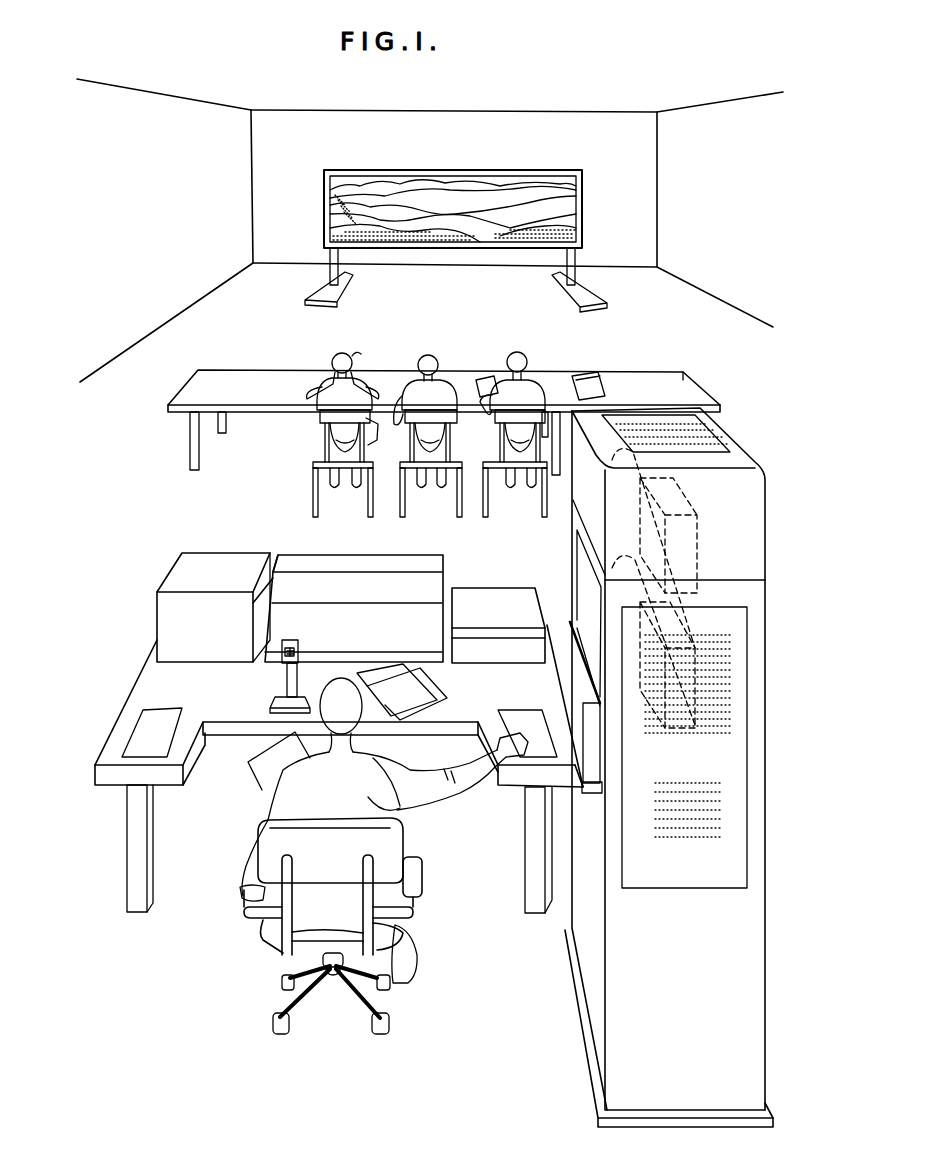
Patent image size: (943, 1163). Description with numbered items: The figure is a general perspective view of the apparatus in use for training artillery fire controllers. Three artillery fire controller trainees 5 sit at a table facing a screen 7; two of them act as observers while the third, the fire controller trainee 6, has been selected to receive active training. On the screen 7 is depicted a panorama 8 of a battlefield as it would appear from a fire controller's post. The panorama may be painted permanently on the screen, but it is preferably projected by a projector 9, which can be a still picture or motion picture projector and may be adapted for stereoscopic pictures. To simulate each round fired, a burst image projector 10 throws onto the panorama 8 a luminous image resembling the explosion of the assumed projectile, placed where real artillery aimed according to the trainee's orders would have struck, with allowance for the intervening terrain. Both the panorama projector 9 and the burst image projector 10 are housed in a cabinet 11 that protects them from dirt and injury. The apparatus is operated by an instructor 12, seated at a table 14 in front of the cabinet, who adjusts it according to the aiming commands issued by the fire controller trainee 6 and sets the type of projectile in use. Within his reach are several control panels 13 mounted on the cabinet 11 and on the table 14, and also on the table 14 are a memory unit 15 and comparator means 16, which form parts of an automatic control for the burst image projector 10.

The artillery fire controller trainees 5 is at (492, 342).
The fire controller trainee 6 is at (333, 393).
The screen 7 is at (587, 211).
The panorama 8 is at (481, 198).
The projector 9 is at (706, 538).
The burst image projector 10 is at (684, 614).
The cabinet 11 is at (765, 720).
The instructor 12 is at (400, 817).
The control panels 13 is at (358, 585).
The table 14 is at (160, 675).
The memory unit 15 is at (510, 603).
The comparator means 16 is at (228, 565).